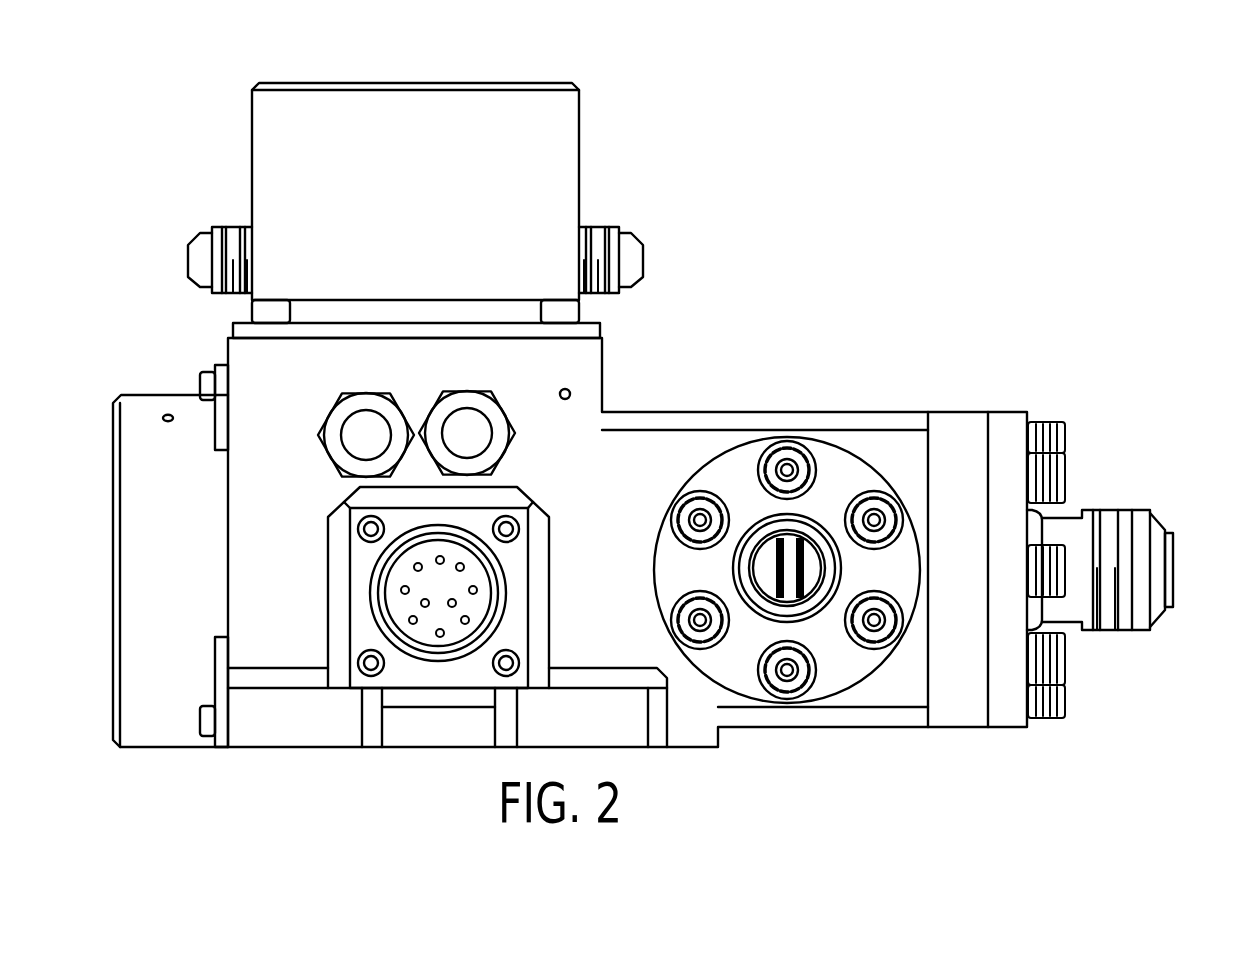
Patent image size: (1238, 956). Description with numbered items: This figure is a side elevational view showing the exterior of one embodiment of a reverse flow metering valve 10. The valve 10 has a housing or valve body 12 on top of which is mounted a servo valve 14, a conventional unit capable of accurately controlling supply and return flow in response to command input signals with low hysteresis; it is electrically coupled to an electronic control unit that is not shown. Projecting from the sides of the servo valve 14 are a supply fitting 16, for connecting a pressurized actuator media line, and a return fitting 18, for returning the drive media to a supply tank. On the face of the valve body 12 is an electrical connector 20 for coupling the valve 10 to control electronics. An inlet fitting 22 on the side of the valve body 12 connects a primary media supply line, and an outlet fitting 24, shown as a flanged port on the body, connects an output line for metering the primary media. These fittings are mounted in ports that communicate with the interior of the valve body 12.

The reverse flow metering valve 10 is at (884, 363).
The valve body 12 is at (766, 412).
The servo valve 14 is at (583, 124).
The supply fitting 16 is at (624, 246).
The return fitting 18 is at (197, 240).
The electrical connector 20 is at (481, 600).
The inlet fitting 22 is at (1173, 572).
The outlet fitting 24 is at (820, 614).